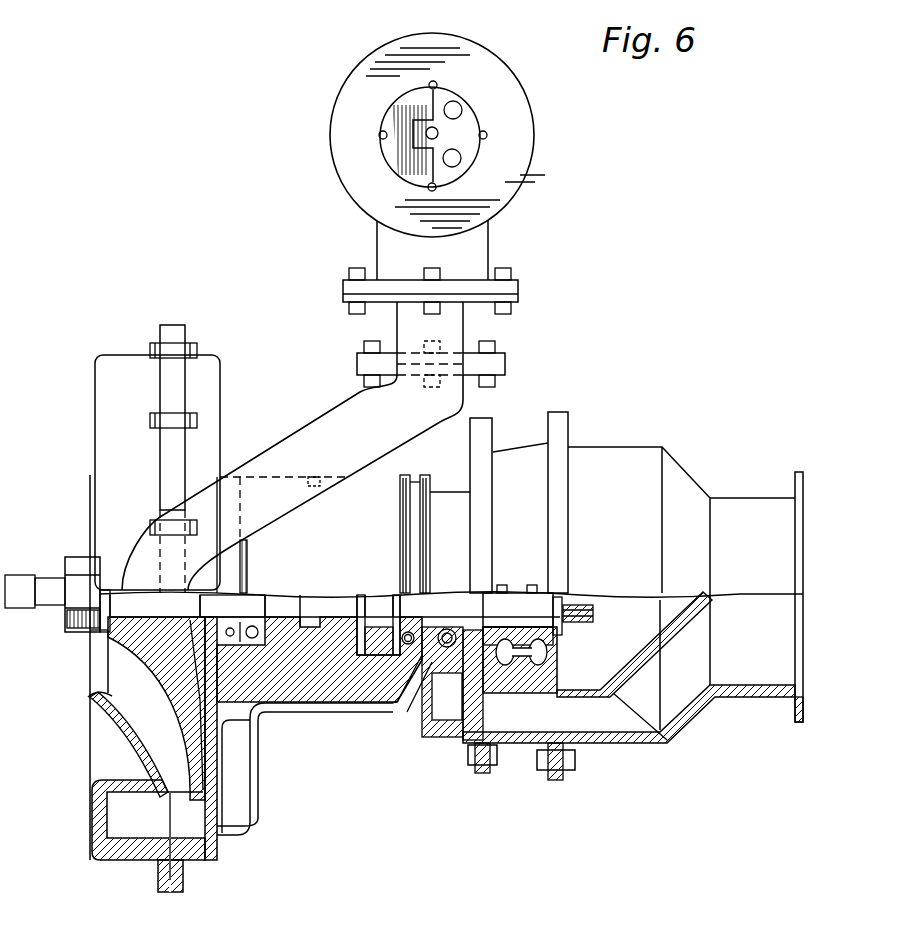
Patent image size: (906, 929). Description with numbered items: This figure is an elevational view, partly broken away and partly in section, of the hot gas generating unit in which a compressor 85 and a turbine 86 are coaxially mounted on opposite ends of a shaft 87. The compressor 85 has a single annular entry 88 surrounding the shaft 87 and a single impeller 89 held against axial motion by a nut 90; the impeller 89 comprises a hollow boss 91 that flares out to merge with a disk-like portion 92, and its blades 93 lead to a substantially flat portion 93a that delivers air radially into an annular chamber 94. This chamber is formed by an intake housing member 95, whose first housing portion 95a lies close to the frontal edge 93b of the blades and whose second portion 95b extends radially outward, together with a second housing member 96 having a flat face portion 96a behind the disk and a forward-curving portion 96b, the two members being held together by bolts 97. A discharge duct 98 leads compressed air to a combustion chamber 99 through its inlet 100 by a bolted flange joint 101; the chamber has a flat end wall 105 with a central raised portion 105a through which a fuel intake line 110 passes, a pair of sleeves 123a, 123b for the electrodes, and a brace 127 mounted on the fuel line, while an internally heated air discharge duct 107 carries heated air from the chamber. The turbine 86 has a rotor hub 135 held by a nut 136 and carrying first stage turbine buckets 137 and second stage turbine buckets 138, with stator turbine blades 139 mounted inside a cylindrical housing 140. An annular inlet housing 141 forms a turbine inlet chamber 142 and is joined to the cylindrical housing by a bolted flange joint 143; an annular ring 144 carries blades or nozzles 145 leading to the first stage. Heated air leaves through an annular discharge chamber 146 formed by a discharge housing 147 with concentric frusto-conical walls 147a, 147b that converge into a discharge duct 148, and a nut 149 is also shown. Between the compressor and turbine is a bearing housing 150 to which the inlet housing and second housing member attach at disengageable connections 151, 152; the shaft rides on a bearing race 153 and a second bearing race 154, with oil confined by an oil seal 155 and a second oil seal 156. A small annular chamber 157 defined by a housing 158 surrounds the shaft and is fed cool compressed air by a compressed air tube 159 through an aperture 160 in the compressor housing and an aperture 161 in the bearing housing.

The compressor 85 is at (100, 458).
The turbine 86 is at (540, 465).
The shaft 87 is at (55, 600).
The annular entry 88 is at (95, 672).
The impeller 89 is at (88, 697).
The nut 90 is at (82, 627).
The hollow boss 91 is at (188, 612).
The disk-like portion 92 is at (215, 738).
The blades 93 is at (112, 720).
The substantially flat portion 93a is at (200, 783).
The frontal edge 93b is at (145, 770).
The annular chamber 94 is at (190, 835).
The intake housing member 95 is at (102, 354).
The first housing portion 95a is at (140, 748).
The second portion 95b is at (92, 858).
The second housing member 96 is at (218, 358).
The flat face portion 96a is at (222, 728).
The curved portion 96b is at (188, 862).
The bolts 97 is at (150, 358).
The discharge duct 98 is at (278, 442).
The combustion chamber 99 is at (528, 160).
The inlet 100 is at (489, 248).
The bolted flange joint 101 is at (520, 292).
The end wall 105 is at (352, 168).
The central raised portion 105a is at (378, 122).
The internally heated air discharge duct 107 is at (476, 410).
The fuel intake line 110 is at (430, 128).
The sleeve 123a is at (461, 158).
The sleeve 123b is at (462, 110).
The brace 127 is at (440, 86).
The rotor hub 135 is at (557, 665).
The nut 136 is at (596, 612).
The first stage turbine buckets 137 is at (492, 768).
The second stage turbine buckets 138 is at (528, 745).
The stator turbine blades 139 is at (515, 748).
The cylindrical housing 140 is at (515, 450).
The inlet housing 141 is at (435, 705).
The turbine inlet chamber 142 is at (445, 735).
The bolted flange joint 143 is at (480, 760).
The annular ring 144 is at (440, 690).
The blades or nozzles 145 is at (455, 722).
The discharge chamber 146 is at (612, 732).
The discharge housing 147 is at (660, 745).
The frusto-conical wall 147a is at (690, 720).
The frusto-conical wall 147b is at (665, 640).
The discharge duct 148 is at (790, 712).
The nut 149 is at (567, 773).
The bearing housing 150 is at (360, 490).
The disengageable connection 151 is at (428, 484).
The disengageable connection 152 is at (244, 565).
The bearing race 153 is at (295, 600).
The second bearing race 154 is at (383, 600).
The oil seal 155 is at (250, 612).
The second oil seal 156 is at (412, 630).
The annular chamber 157 is at (475, 600).
The housing 158 is at (480, 625).
The compressed air tube 159 is at (258, 830).
The aperture 160 is at (225, 838).
The aperture 161 is at (385, 712).